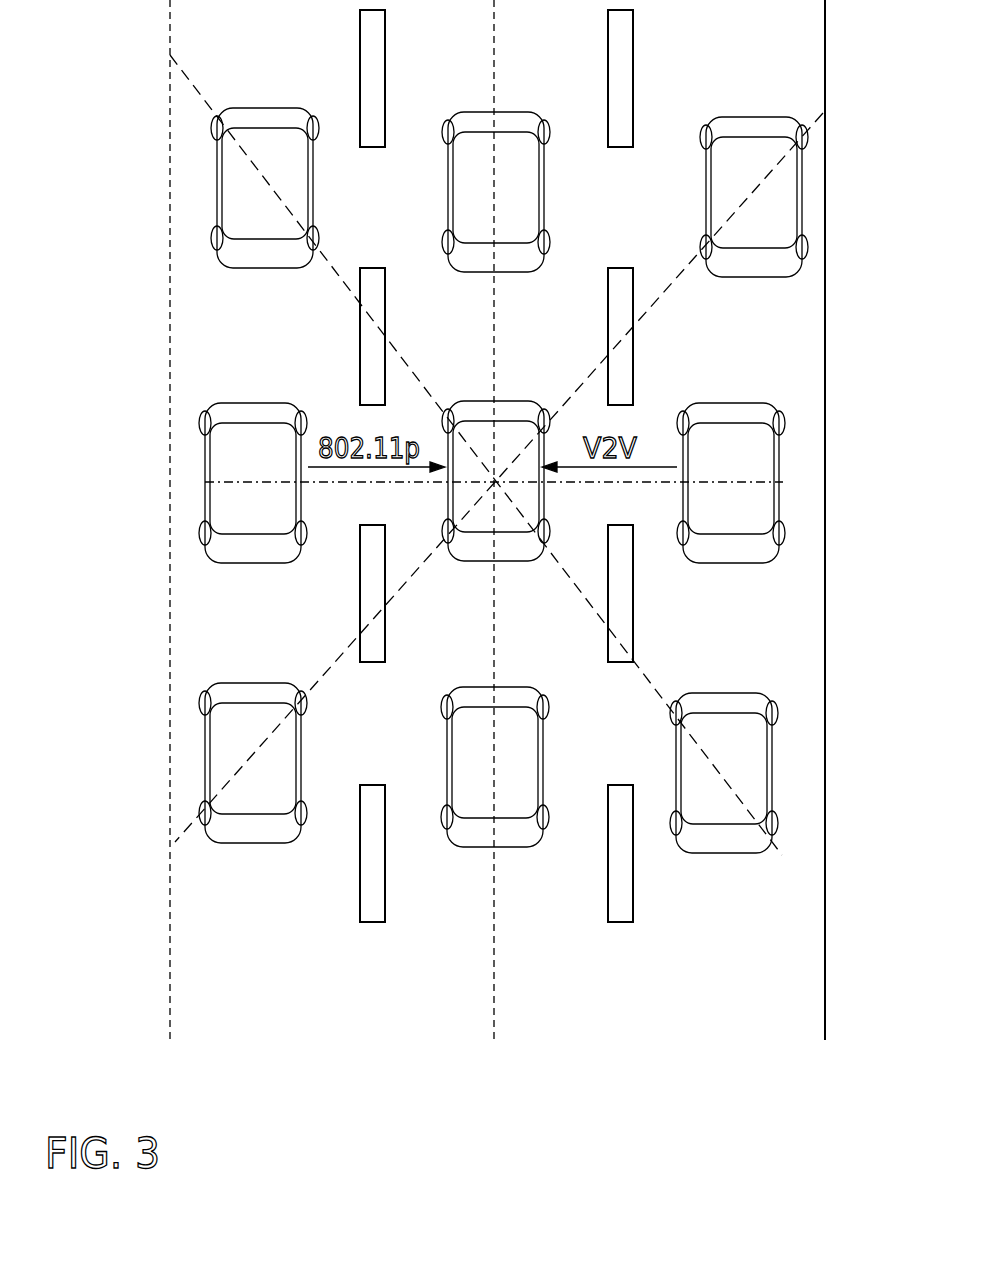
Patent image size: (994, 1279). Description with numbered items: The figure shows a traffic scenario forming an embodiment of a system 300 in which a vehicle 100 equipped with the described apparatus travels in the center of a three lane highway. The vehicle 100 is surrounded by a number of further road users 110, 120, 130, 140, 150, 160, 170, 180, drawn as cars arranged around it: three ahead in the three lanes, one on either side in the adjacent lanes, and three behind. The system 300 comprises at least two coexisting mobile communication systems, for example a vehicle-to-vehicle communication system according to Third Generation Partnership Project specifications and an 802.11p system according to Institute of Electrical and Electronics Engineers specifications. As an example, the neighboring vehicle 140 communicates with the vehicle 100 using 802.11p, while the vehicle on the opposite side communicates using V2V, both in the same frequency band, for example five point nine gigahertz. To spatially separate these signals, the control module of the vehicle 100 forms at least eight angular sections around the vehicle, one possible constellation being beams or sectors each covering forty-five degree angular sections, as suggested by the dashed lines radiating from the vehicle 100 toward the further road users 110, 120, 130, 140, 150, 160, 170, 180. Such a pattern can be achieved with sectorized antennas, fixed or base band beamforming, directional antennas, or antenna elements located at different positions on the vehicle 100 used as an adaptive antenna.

The system 300 is at (182, 1098).
The vehicle 100 is at (470, 548).
The further road user 110 is at (263, 253).
The further road user 120 is at (517, 262).
The further road user 130 is at (744, 262).
The further road user 140 is at (259, 548).
The further road user 150 is at (716, 548).
The further road user 160 is at (263, 830).
The further road user 170 is at (470, 833).
The further road user 180 is at (713, 840).